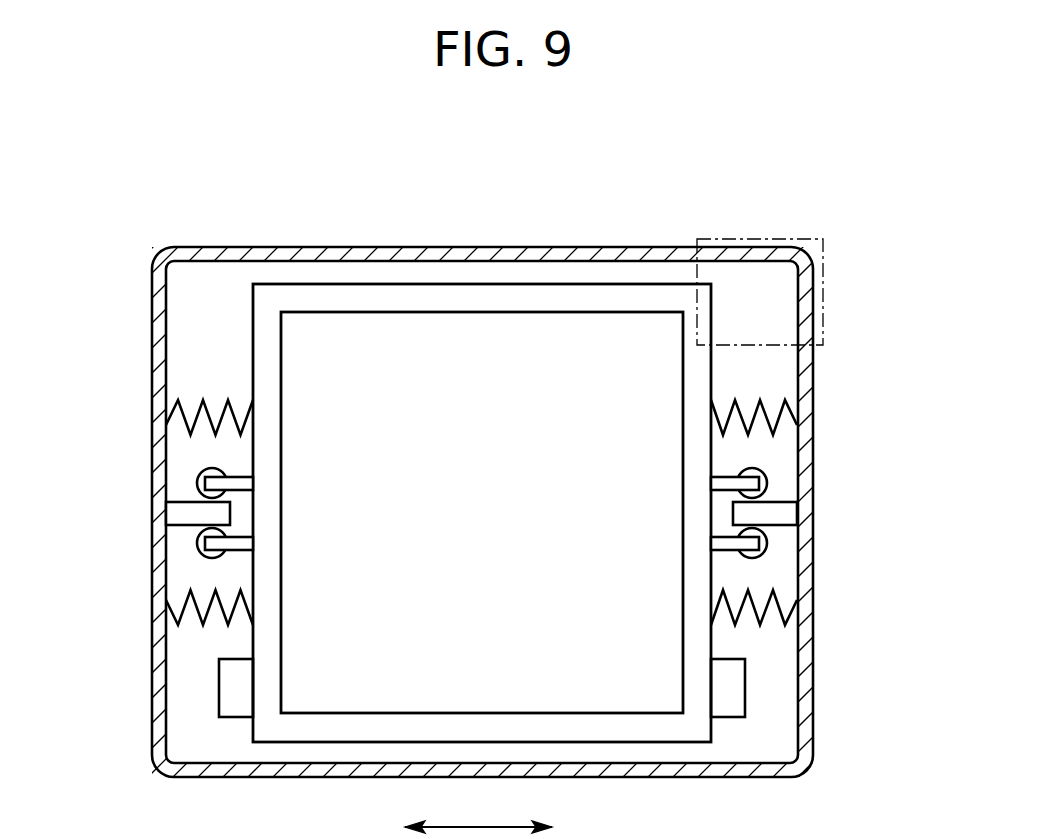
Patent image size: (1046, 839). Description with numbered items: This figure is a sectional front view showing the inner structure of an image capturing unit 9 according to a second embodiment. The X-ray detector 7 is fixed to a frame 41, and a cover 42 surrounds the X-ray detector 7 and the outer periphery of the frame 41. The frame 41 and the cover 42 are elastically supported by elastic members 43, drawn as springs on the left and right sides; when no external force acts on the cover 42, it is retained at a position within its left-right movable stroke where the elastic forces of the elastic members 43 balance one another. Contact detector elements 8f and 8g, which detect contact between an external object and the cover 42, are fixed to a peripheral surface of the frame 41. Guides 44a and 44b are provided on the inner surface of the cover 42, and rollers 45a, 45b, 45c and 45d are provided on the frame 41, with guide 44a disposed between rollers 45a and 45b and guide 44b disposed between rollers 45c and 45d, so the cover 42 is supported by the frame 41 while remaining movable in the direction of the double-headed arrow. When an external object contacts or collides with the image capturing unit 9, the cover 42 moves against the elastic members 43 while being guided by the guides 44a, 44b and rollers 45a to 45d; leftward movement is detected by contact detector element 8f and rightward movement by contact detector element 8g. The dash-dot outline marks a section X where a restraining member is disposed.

The image capturing unit 9 is at (845, 213).
The cover 42 is at (292, 250).
The frame 41 is at (592, 303).
The X-ray detector 7 is at (423, 333).
The elastic members 43 is at (172, 398).
The guide 44a is at (176, 513).
The guide 44b is at (787, 513).
The roller 45a is at (197, 479).
The roller 45b is at (197, 548).
The roller 45c is at (767, 476).
The roller 45d is at (767, 548).
The contact detector element 8f is at (230, 683).
The contact detector element 8g is at (735, 687).
The section X is at (796, 238).